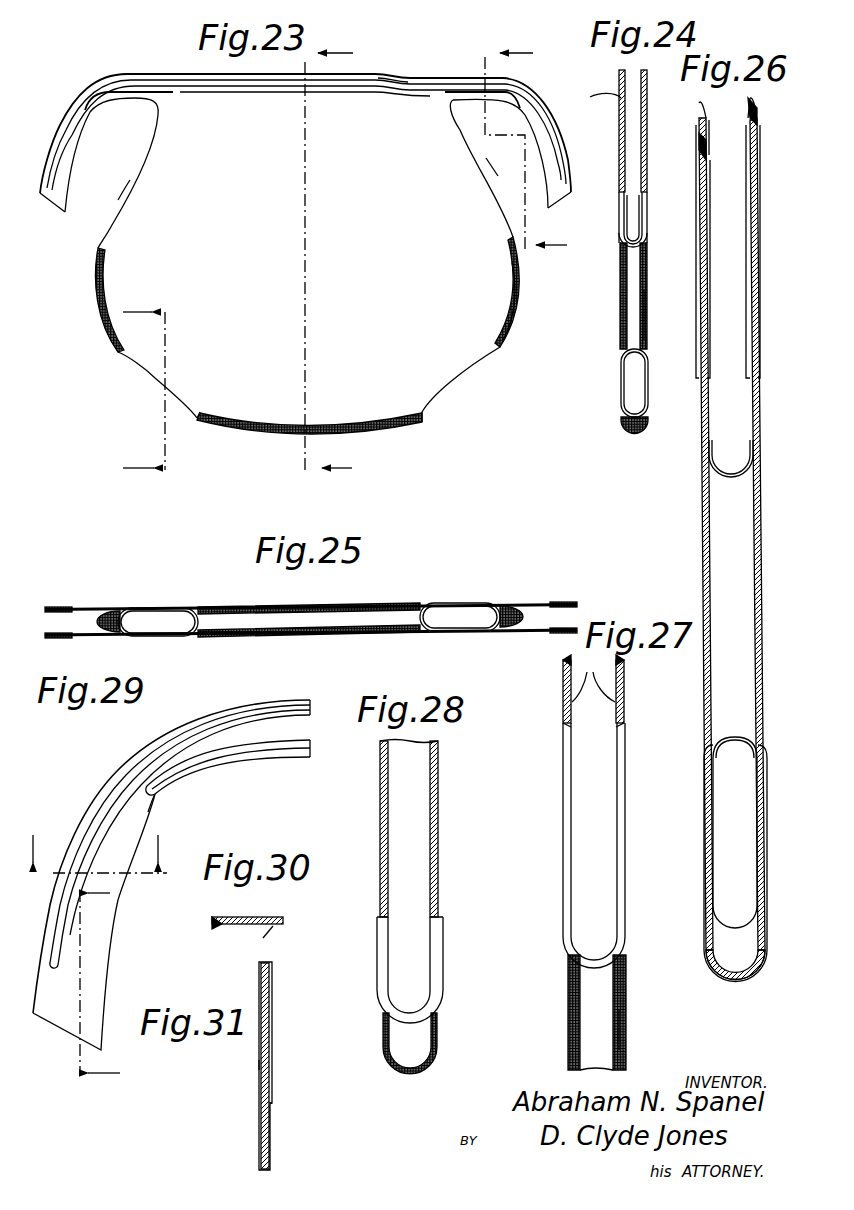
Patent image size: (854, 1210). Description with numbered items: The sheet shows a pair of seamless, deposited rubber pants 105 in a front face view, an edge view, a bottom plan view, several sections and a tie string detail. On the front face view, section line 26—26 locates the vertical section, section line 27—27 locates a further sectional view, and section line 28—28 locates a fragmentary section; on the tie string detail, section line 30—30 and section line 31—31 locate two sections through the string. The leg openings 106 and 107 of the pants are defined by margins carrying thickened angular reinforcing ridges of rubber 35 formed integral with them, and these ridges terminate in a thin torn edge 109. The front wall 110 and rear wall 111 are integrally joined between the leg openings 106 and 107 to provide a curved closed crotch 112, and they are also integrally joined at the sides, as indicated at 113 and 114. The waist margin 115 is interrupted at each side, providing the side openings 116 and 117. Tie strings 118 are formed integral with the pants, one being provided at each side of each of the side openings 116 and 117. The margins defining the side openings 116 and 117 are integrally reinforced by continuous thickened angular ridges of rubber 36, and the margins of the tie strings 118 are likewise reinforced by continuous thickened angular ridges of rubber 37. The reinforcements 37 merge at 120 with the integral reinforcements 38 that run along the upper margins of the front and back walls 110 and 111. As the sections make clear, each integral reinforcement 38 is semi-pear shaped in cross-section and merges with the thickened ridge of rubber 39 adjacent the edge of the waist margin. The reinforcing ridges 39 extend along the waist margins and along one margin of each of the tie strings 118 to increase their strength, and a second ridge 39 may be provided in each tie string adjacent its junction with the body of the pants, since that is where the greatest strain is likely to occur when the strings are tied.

In FIG. 23, the section line 26— 26 is at (320, 269).
In FIG. 23, the section line 27— 27 is at (526, 150).
In FIG. 23, the section line 28— 28 is at (151, 394).
In FIG. 29, the section line 30— 30 is at (104, 864).
In FIG. 29, the section line 31— 31 is at (91, 985).
In FIG. 23, the thickened angular reinforcing ridges of rubber 35 is at (182, 382).
In FIG. 28, the thickened angular reinforcing ridges of rubber 35 is at (380, 917).
In FIG. 23, the thickened angular ridges of rubber 36 is at (120, 195).
In FIG. 27, the thickened angular ridges of rubber 36 is at (565, 820).
In FIG. 23, the thickened angular ridges of rubber 37 is at (82, 135).
In FIG. 29, the thickened angular ridges of rubber 37 is at (83, 827).
In FIG. 30, the thickened angular ridges of rubber 37 is at (263, 938).
In FIG. 31, the thickened angular ridges of rubber 37 is at (259, 1063).
In FIG. 27, the thickened angular ridges of rubber 37 is at (563, 727).
In FIG. 23, the integral reinforcements 38 is at (422, 76).
In FIG. 26, the integral reinforcements 38 is at (698, 137).
In FIG. 29, the integral reinforcements 38 is at (147, 746).
In FIG. 27, the integral reinforcements 38 is at (563, 660).
In FIG. 23, the thickened ridge of rubber 39 is at (150, 91).
In FIG. 26, the thickened ridge of rubber 39 is at (708, 157).
In FIG. 29, the thickened ridge of rubber 39 is at (313, 739).
In FIG. 30, the thickened ridge of rubber 39 is at (227, 918).
In FIG. 31, the thickened ridge of rubber 39 is at (272, 1087).
In FIG. 27, the thickened ridge of rubber 39 is at (574, 677).
In FIG. 23, the pair of seamless deposited rubber pants 105 is at (427, 95).
In FIG. 23, the leg opening 106 is at (137, 365).
In FIG. 26, the leg opening 106 is at (752, 813).
In FIG. 25, the leg opening 106 is at (168, 618).
In FIG. 28, the leg opening 106 is at (423, 963).
In FIG. 23, the leg opening 107 is at (482, 355).
In FIG. 24, the leg opening 107 is at (640, 390).
In FIG. 25, the leg opening 107 is at (462, 618).
In FIG. 28, the thin torn edge 109 is at (378, 918).
In FIG. 23, the front wall 110 is at (483, 310).
In FIG. 24, the front wall 110 is at (623, 260).
In FIG. 26, the front wall 110 is at (703, 523).
In FIG. 28, the front wall 110 is at (438, 850).
In FIG. 27, the front wall 110 is at (570, 987).
In FIG. 24, the rear wall 111 is at (645, 277).
In FIG. 26, the rear wall 111 is at (758, 533).
In FIG. 28, the rear wall 111 is at (383, 842).
In FIG. 27, the rear wall 111 is at (625, 980).
In FIG. 23, the curved closed crotch 112 is at (392, 428).
In FIG. 24, the curved closed crotch 112 is at (633, 432).
In FIG. 26, the curved closed crotch 112 is at (745, 980).
In FIG. 25, the curved closed crotch 112 is at (390, 615).
In FIG. 28, the curved closed crotch 112 is at (413, 1067).
In FIG. 23, the side joint 113 is at (92, 307).
In FIG. 26, the side joint 113 is at (743, 657).
In FIG. 25, the side joint 113 is at (110, 615).
In FIG. 23, the side joint 114 is at (520, 287).
In FIG. 24, the side joint 114 is at (645, 305).
In FIG. 25, the side joint 114 is at (525, 598).
In FIG. 27, the side joint 114 is at (603, 1035).
In FIG. 23, the waist margin 115 is at (378, 75).
In FIG. 26, the waist margin 115 is at (750, 98).
In FIG. 23, the side opening 116 is at (123, 197).
In FIG. 26, the side opening 116 is at (738, 452).
In FIG. 23, the side opening 117 is at (490, 167).
In FIG. 24, the side opening 117 is at (637, 213).
In FIG. 27, the side opening 117 is at (607, 877).
In FIG. 23, the tie strings 118 is at (67, 147).
In FIG. 24, the tie strings 118 is at (633, 156).
In FIG. 25, the tie strings 118 is at (52, 630).
In FIG. 29, the tie strings 118 is at (143, 818).
In FIG. 30, the tie strings 118 is at (260, 917).
In FIG. 31, the tie strings 118 is at (272, 1017).
In FIG. 27, the tie strings 118 is at (565, 687).
In FIG. 23, the merging point 120 is at (77, 98).
In FIG. 29, the merging point 120 is at (101, 792).